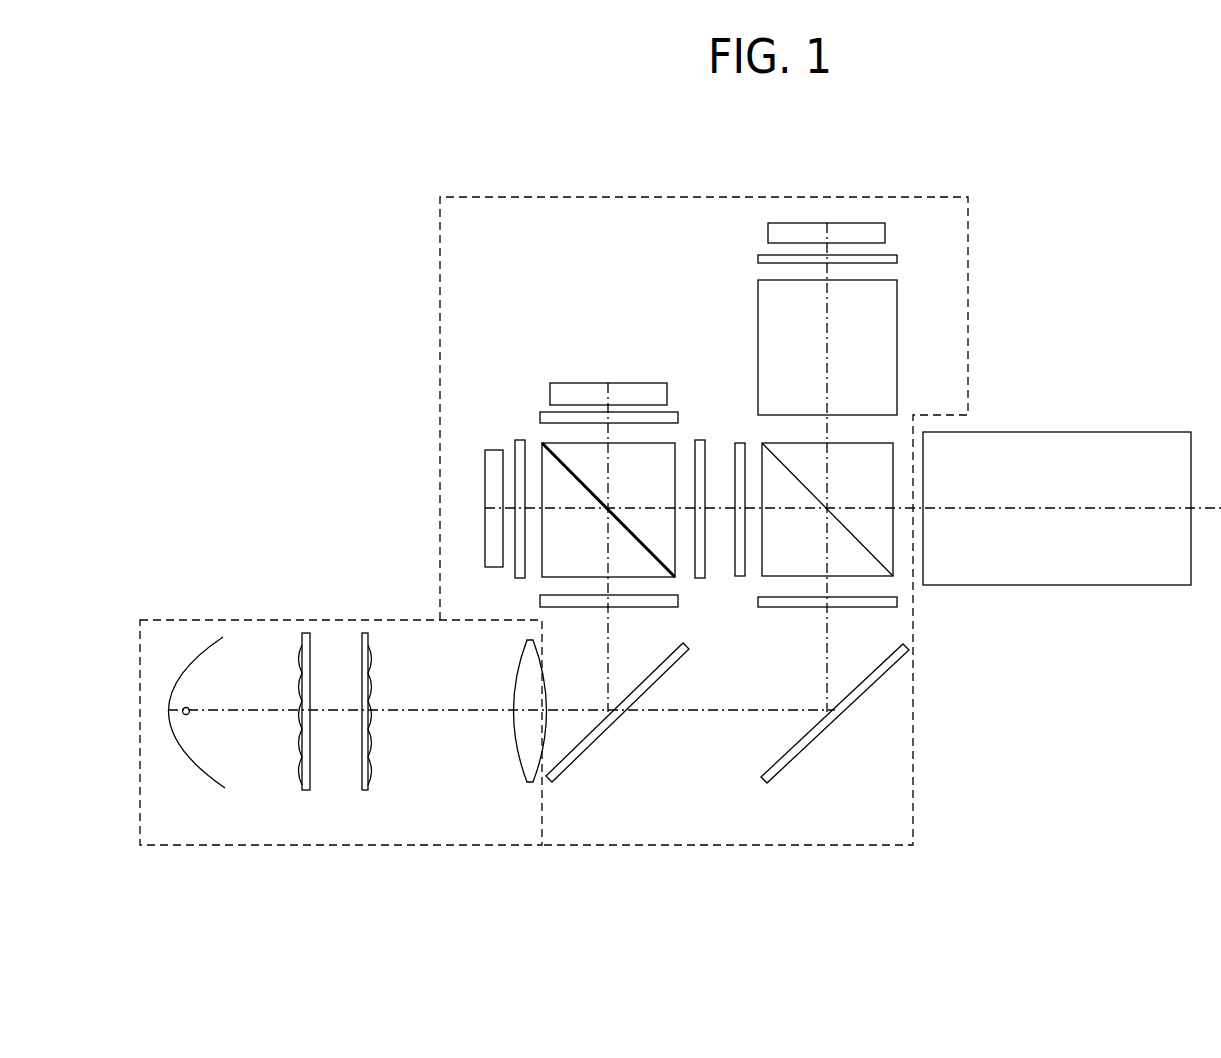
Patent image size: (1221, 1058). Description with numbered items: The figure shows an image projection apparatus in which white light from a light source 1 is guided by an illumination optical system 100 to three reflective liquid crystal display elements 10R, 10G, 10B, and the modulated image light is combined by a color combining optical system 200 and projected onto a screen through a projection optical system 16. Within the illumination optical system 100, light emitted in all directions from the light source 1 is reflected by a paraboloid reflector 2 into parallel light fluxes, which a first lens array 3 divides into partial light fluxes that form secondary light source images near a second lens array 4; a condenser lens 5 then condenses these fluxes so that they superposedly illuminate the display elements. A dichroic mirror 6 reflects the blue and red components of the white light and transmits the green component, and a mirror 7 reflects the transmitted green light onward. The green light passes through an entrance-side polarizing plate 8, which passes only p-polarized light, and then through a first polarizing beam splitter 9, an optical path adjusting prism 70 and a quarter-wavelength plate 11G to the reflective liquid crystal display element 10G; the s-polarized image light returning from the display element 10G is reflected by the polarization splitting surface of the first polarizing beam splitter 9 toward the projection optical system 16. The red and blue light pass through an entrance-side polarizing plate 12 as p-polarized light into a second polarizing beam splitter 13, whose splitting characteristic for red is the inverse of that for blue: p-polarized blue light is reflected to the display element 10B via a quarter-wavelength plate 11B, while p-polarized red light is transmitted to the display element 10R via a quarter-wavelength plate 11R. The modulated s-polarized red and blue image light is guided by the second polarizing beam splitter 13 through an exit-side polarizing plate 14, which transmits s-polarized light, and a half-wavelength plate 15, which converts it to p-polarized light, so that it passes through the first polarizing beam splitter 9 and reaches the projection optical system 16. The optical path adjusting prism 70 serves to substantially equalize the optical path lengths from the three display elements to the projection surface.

The light source 1 is at (190, 715).
The paraboloid reflector 2 is at (218, 782).
The first lens array 3 is at (302, 790).
The second lens array 4 is at (362, 790).
The condenser lens 5 is at (525, 763).
The dichroic mirror 6 is at (553, 781).
The mirror 7 is at (769, 779).
The entrance-side polarizing plate 8 is at (770, 608).
The first polarizing beam splitter 9 is at (762, 577).
The reflective liquid crystal display element for red 10R is at (550, 390).
The reflective liquid crystal display element for green 10G is at (885, 231).
The reflective liquid crystal display element for blue 10B is at (485, 470).
The quarter-wavelength plate for red light 11R is at (540, 417).
The quarter-wavelength plate for green light 11G is at (897, 259).
The quarter-wavelength plate for blue light 11B is at (520, 578).
The entrance-side polarizing plate 12 is at (678, 607).
The second polarizing beam splitter 13 is at (676, 578).
The exit-side polarizing plate 14 is at (700, 440).
The half-wavelength plate 15 is at (740, 442).
The projection optical system 16 is at (1112, 432).
The optical path adjusting prism 70 is at (897, 300).
The illumination optical system 100 is at (190, 846).
The color combining optical system 200 is at (522, 196).